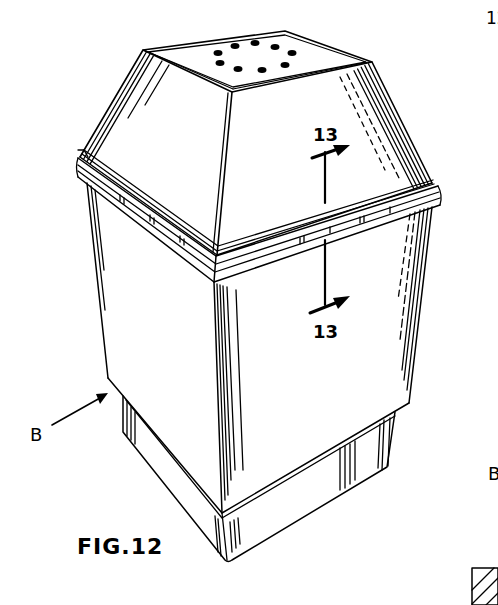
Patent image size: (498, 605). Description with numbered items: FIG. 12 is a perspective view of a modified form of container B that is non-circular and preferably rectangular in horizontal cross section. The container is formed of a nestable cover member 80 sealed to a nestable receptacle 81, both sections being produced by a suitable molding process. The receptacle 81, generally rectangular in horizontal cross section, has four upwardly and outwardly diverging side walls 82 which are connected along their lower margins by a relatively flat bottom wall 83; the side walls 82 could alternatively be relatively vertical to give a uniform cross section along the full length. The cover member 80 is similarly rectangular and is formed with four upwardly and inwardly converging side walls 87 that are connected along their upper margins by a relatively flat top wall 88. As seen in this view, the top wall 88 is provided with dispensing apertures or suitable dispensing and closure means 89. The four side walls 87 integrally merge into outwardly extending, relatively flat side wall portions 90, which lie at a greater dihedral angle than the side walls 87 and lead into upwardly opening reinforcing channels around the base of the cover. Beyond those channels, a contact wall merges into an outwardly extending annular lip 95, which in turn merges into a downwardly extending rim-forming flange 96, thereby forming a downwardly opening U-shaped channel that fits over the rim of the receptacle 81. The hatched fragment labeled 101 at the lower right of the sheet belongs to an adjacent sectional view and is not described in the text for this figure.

The nestable cover member 80 is at (274, 131).
The nestable receptacle 81 is at (287, 367).
The side walls 82 is at (405, 358).
The bottom wall 83 is at (278, 537).
The side walls 87 is at (353, 100).
The top wall 88 is at (235, 45).
The dispensing apertures 89 is at (255, 56).
The side wall portions 90 is at (409, 177).
The annular lip 95 is at (421, 189).
The rim-forming flange 96 is at (439, 194).
The wall section 101 is at (472, 575).